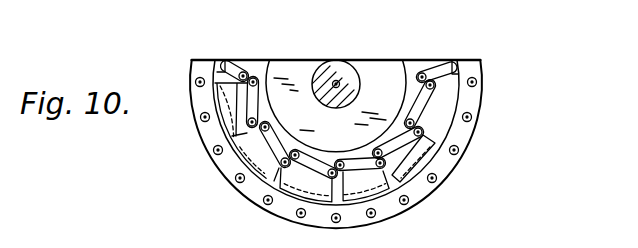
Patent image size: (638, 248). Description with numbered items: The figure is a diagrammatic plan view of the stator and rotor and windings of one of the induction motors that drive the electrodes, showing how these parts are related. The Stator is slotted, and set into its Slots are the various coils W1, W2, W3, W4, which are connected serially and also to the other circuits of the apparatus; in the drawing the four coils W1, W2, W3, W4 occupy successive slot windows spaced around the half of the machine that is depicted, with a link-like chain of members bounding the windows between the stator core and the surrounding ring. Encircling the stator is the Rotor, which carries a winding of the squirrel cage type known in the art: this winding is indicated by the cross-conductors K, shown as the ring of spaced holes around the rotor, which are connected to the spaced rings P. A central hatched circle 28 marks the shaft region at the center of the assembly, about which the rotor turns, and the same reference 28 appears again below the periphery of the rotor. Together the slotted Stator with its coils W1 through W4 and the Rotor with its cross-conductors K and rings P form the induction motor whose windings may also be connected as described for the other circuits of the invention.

The shaft 28 is at (351, 67).
The coil W1 is at (413, 158).
The coil W2 is at (366, 186).
The coil W3 is at (306, 185).
The coil W4 is at (247, 132).
The spaced rings P is at (222, 166).
The cross-conductors K is at (264, 202).
The stator Stator is at (433, 90).
The rotor Rotor is at (474, 131).
The slots Slots is at (410, 191).